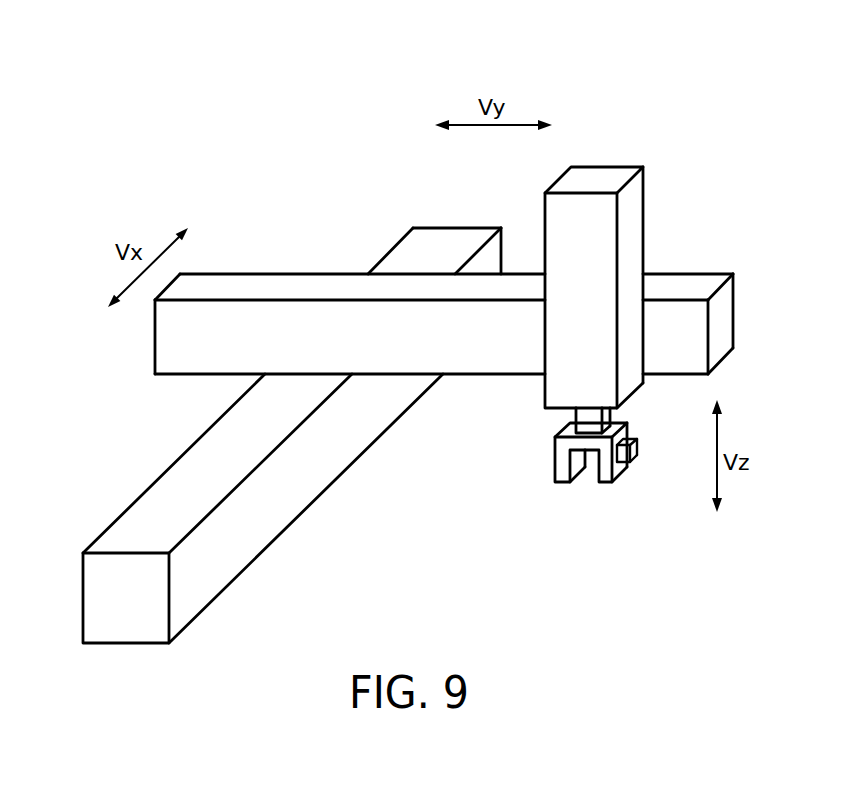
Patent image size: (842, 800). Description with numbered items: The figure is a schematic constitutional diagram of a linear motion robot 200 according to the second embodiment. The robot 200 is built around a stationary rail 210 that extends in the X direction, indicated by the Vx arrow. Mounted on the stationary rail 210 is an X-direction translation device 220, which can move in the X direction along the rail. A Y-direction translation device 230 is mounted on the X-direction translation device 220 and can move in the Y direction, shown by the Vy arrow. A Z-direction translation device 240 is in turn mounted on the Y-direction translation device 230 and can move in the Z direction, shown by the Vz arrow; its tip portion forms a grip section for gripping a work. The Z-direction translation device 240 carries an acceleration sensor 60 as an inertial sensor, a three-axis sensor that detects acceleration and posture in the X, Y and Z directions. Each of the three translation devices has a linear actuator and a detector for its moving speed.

The linear motion robot 200 is at (655, 55).
The stationary rail 210 is at (145, 488).
The X-direction translation device 220 is at (292, 273).
The Y-direction translation device 230 is at (646, 213).
The Z-direction translation device 240 is at (553, 468).
The acceleration sensor 60 is at (637, 449).